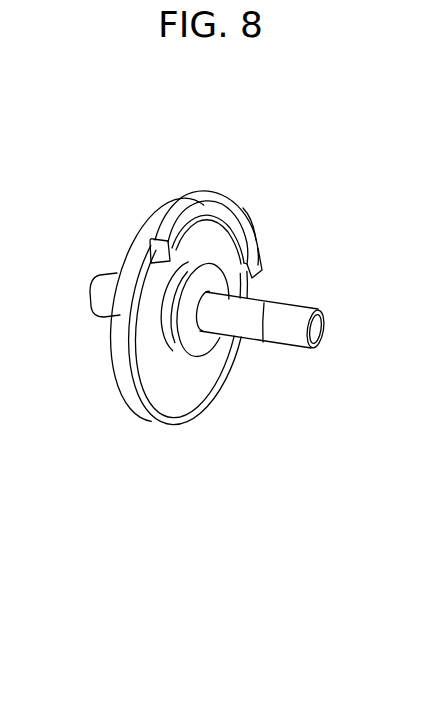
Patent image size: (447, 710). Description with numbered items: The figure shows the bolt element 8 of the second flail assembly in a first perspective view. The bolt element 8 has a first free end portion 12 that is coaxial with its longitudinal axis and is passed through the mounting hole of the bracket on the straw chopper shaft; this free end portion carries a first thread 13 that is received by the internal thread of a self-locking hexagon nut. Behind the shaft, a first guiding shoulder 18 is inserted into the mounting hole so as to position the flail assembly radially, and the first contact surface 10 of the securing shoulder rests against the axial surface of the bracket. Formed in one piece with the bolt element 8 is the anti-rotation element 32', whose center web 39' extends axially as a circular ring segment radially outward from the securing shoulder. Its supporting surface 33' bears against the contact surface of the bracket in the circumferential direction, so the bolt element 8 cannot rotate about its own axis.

The bolt element 8 is at (131, 458).
The first contact surface 10 is at (137, 335).
The first free end portion 12 is at (241, 322).
The first thread 13 is at (296, 334).
The first guiding shoulder 18 is at (189, 344).
The anti-rotation element 32' is at (207, 201).
The supporting surface 33' is at (299, 262).
The center web 39' is at (294, 203).